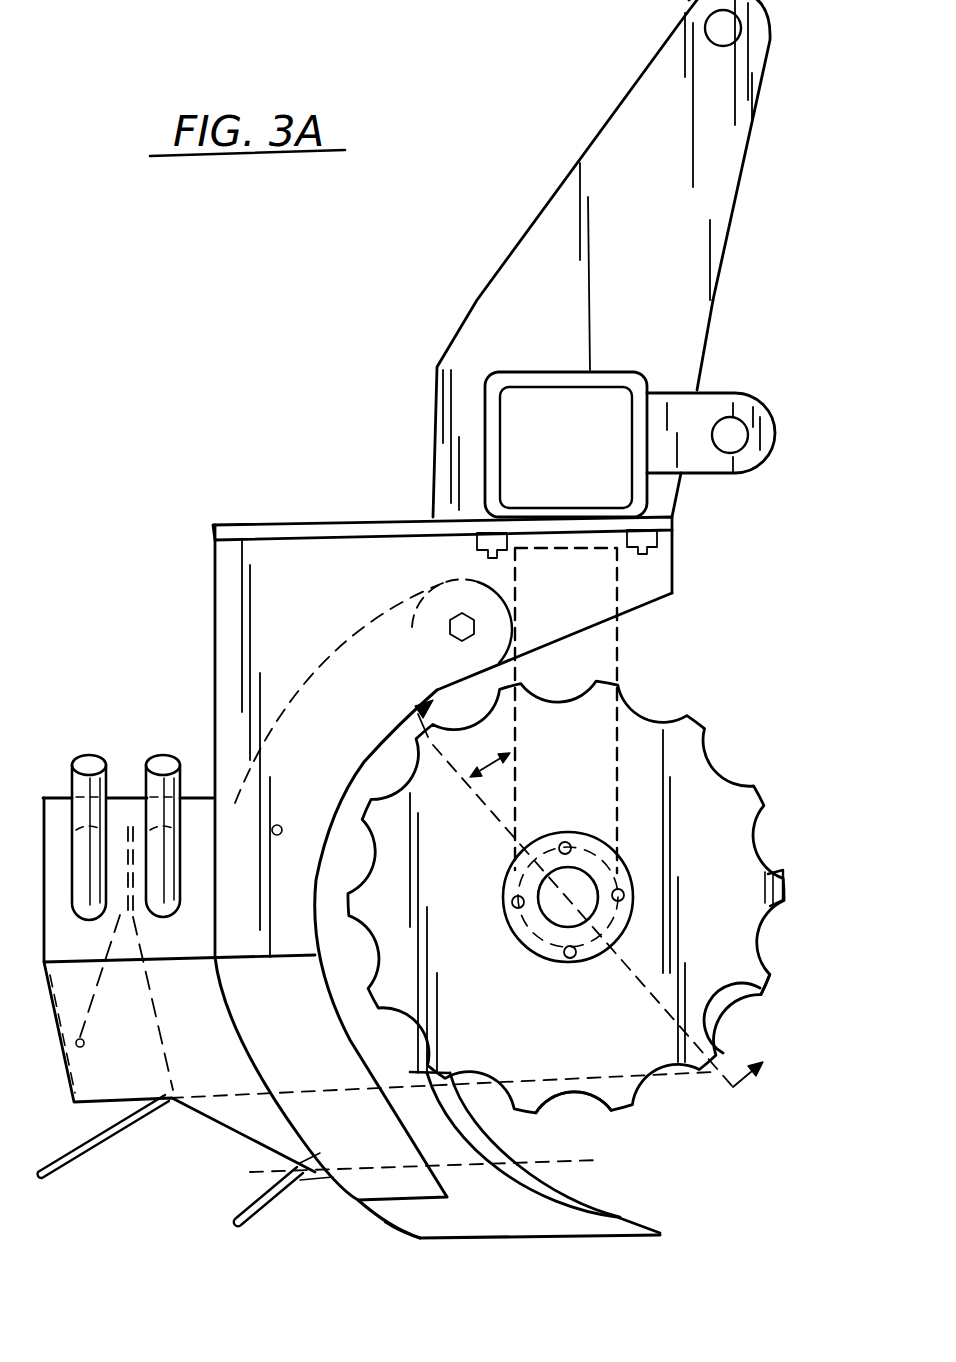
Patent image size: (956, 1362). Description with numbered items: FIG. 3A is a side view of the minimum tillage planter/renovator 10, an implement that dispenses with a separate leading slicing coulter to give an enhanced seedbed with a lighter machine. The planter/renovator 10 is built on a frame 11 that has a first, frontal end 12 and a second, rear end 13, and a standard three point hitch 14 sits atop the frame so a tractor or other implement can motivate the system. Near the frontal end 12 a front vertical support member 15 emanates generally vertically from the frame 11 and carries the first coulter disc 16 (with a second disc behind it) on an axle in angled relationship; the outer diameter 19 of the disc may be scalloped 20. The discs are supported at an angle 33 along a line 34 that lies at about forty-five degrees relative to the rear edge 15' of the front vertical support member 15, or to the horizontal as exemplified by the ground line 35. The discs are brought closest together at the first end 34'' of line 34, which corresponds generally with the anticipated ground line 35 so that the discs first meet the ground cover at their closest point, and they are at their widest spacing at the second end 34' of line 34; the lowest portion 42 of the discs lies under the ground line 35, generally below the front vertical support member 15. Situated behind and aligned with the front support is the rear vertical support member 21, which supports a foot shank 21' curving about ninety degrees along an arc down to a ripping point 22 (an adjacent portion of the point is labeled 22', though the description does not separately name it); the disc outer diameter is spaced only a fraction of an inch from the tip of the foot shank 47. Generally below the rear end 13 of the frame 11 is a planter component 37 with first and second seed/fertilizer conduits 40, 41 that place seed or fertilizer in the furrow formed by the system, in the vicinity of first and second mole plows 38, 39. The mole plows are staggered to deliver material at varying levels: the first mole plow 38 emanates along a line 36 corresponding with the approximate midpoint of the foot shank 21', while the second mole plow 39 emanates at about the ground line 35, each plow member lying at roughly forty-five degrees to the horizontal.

The minimum tillage planter/renovator 10 is at (283, 570).
The frame 11 is at (313, 520).
The first, frontal end 12 is at (677, 548).
The second, rear end 13 is at (213, 617).
The three point hitch 14 is at (648, 236).
The front vertical support member 15 is at (610, 760).
The rear edge of front vertical support member 15' is at (504, 630).
The first coulter disc 16 is at (743, 863).
The outer diameter 19 is at (770, 982).
The scalloped 20 is at (773, 998).
The rear vertical support member 21 is at (331, 964).
The foot shank 21' is at (416, 1255).
The ripping point 22 is at (578, 1172).
The wing bottom edge 22' is at (540, 1263).
The angle 33 is at (476, 765).
The line 34 is at (583, 916).
The second end of line 34' is at (395, 747).
The first end of line 34'' is at (730, 1109).
The ground line 35 is at (685, 1072).
The line 36 is at (566, 1160).
The planter component 37 is at (43, 950).
The first mole plow 38 is at (298, 1183).
The second mole plow 39 is at (103, 1135).
The first seed/fertilizer conduit 40 is at (190, 705).
The second seed/fertilizer conduit 41 is at (97, 750).
The lowest portion of the discs 42 is at (613, 1112).
The tip of the foot shank 47 is at (443, 1080).